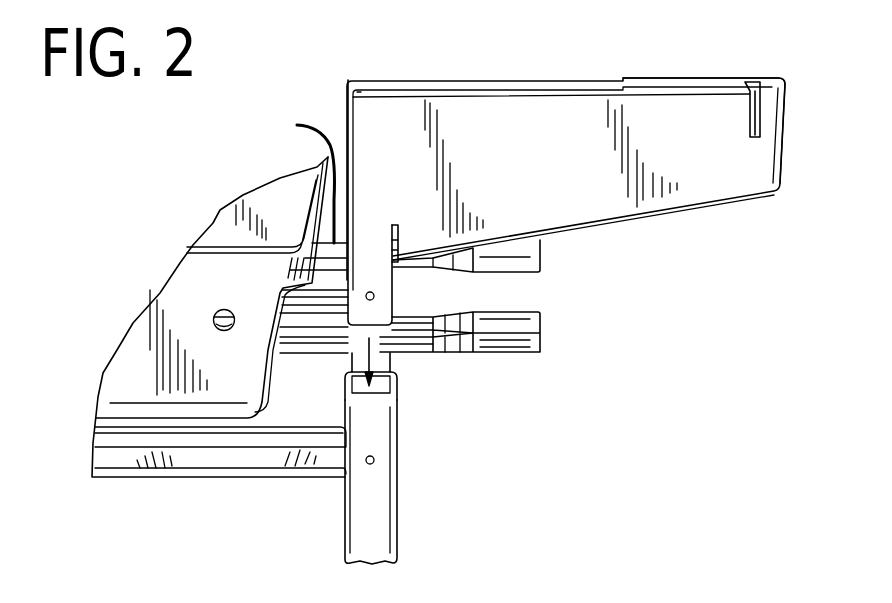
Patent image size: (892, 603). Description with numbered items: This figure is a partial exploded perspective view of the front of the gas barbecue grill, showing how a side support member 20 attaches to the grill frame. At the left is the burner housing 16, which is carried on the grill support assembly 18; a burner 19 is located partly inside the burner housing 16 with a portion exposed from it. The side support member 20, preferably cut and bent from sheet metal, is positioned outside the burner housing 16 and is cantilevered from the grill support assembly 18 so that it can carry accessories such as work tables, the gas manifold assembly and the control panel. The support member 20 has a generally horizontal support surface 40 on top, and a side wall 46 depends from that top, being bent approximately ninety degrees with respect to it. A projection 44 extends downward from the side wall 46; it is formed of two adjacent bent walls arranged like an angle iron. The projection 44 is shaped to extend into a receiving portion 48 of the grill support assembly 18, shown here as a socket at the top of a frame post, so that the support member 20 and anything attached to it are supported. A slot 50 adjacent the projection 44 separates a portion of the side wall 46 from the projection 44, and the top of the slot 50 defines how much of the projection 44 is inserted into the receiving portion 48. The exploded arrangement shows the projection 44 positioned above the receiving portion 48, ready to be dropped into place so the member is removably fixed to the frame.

The burner housing 16 is at (143, 397).
The grill support assembly 18 is at (398, 517).
The burner 19 is at (302, 178).
The side support member 20 is at (786, 129).
The support surface 40 is at (501, 86).
The projection 44 is at (393, 287).
The side wall 46 is at (716, 171).
The receiving portion 48 is at (380, 384).
The slot 50 is at (395, 226).